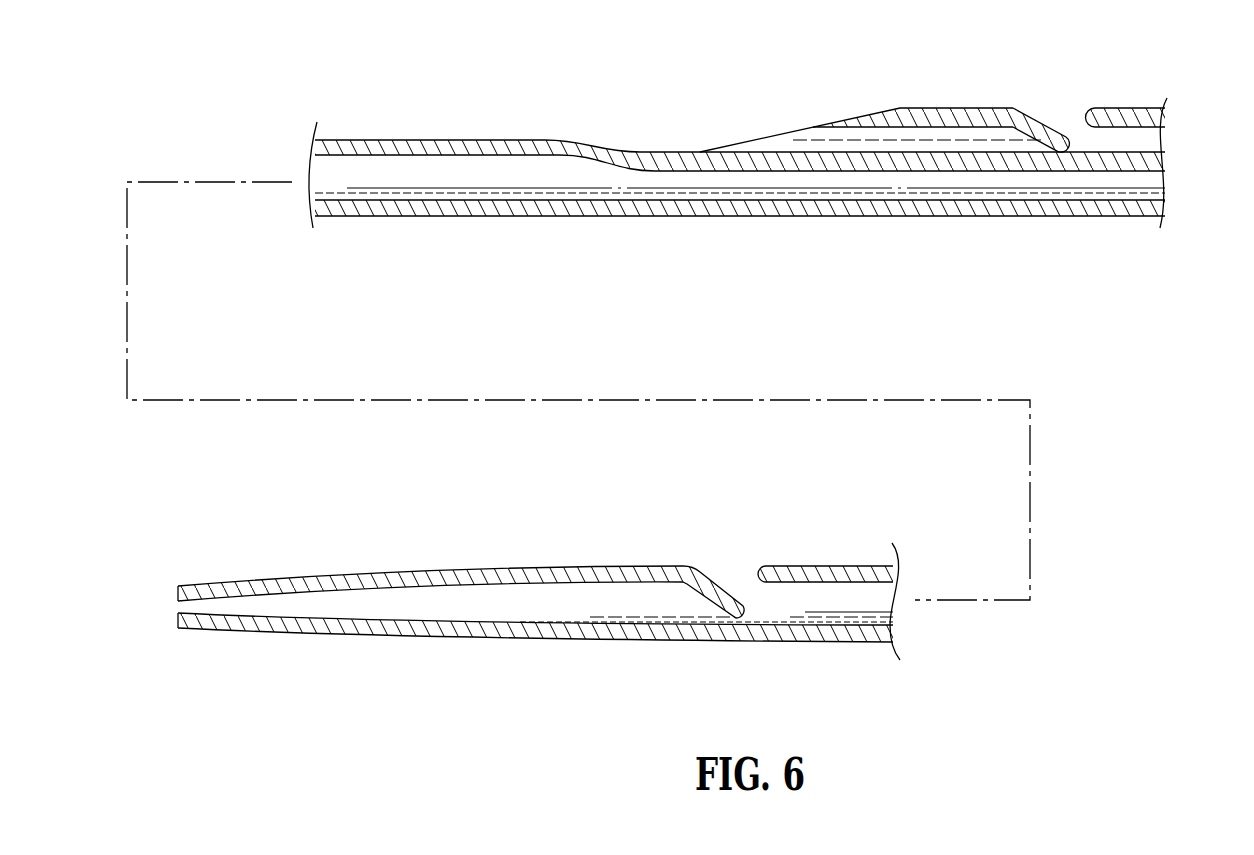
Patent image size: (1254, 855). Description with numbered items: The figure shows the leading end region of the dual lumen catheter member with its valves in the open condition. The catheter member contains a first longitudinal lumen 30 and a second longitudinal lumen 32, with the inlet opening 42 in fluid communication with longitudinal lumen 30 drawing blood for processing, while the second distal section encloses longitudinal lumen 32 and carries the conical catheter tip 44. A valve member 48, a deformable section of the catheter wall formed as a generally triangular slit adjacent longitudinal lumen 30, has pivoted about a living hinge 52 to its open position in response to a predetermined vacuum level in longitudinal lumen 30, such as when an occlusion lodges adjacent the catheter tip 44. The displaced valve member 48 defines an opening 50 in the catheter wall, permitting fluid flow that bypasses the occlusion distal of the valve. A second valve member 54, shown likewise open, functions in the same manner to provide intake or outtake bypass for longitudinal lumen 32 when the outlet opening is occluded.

The first longitudinal lumen 30 is at (1147, 137).
The second longitudinal lumen 32 is at (1068, 183).
The inlet opening 42 is at (887, 92).
The catheter tip 44 is at (535, 559).
The valve member 48 is at (1011, 92).
The opening 50 is at (1061, 107).
The living hinge 52 is at (1012, 107).
The second valve member 54 is at (716, 577).